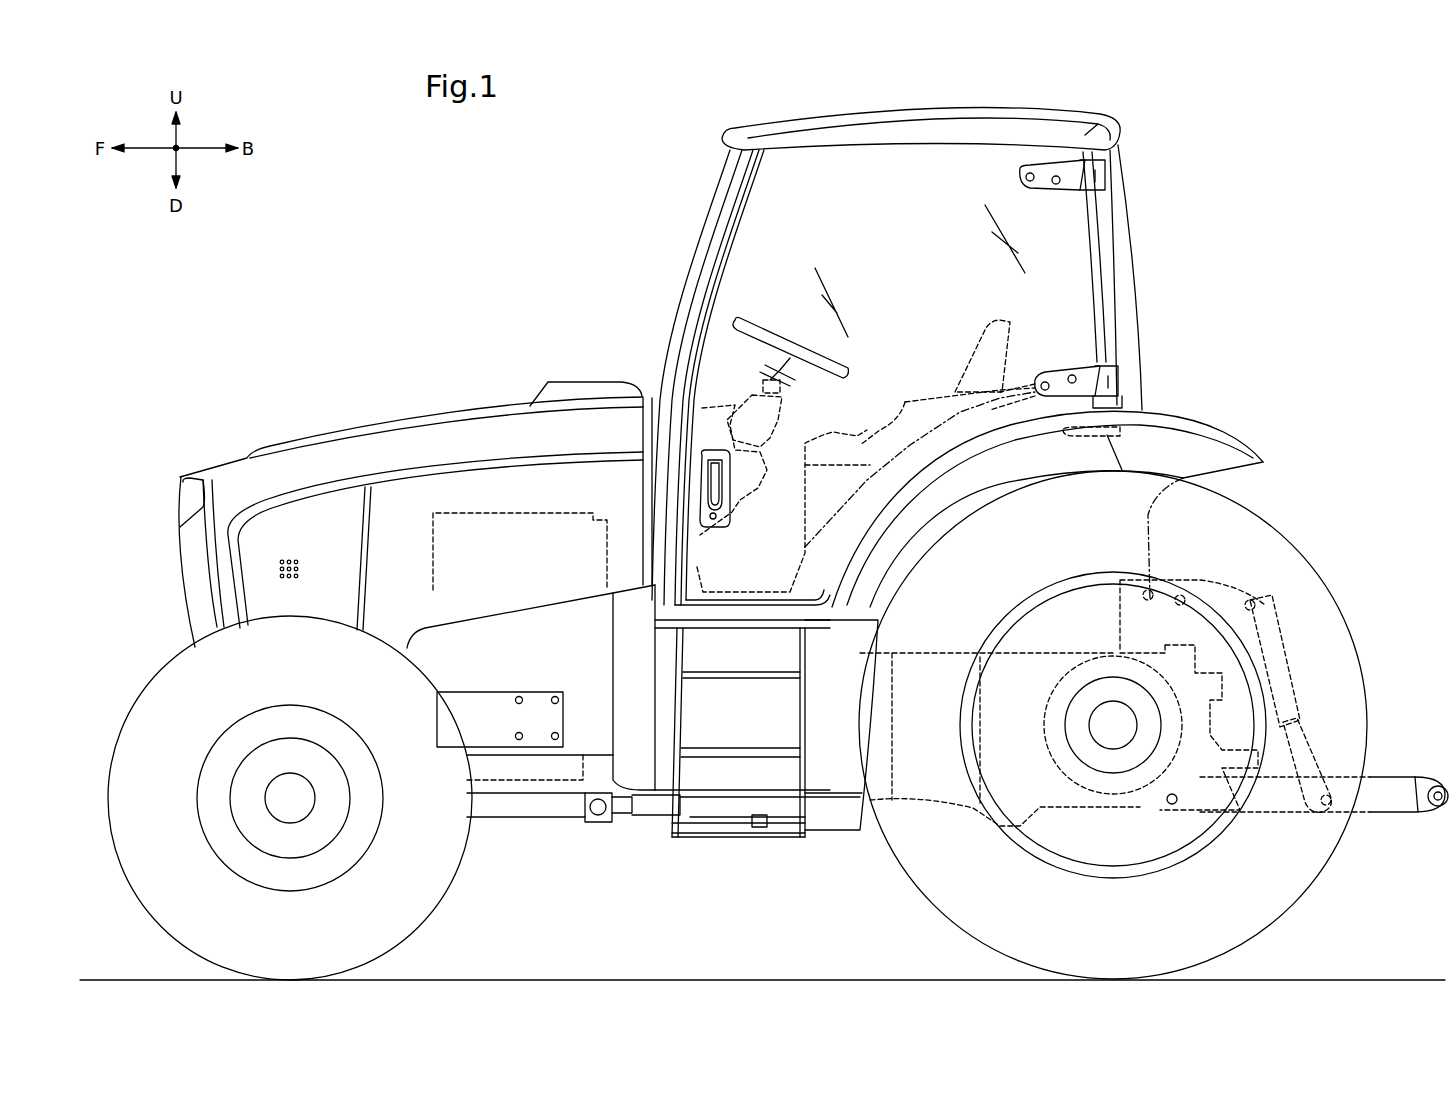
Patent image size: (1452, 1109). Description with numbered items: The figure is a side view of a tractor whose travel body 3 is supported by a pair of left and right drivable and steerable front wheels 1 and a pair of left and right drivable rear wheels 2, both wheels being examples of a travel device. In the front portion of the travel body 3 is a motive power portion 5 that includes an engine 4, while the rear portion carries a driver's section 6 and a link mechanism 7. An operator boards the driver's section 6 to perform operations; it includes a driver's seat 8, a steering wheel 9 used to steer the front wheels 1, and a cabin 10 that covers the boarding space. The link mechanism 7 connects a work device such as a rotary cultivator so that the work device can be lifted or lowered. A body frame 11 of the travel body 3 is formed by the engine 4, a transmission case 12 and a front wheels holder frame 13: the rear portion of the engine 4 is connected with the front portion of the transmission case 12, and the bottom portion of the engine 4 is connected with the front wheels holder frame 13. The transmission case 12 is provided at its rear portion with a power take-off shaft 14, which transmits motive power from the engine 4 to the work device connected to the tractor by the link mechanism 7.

The front wheels 1 is at (445, 893).
The rear wheels 2 is at (930, 900).
The travel body 3 is at (815, 862).
The engine 4 is at (578, 740).
The motive power portion 5 is at (430, 400).
The driver's section 6 is at (957, 346).
The link mechanism 7 is at (1390, 818).
The driver's seat 8 is at (965, 365).
The steering wheel 9 is at (785, 345).
The cabin 10 is at (1100, 122).
The body frame 11 is at (777, 840).
The transmission case 12 is at (838, 770).
The front wheels holder frame 13 is at (488, 700).
The power take-off shaft 14 is at (1245, 800).